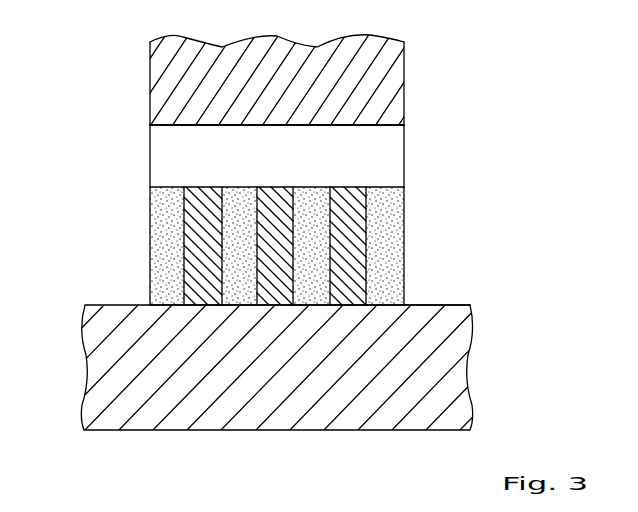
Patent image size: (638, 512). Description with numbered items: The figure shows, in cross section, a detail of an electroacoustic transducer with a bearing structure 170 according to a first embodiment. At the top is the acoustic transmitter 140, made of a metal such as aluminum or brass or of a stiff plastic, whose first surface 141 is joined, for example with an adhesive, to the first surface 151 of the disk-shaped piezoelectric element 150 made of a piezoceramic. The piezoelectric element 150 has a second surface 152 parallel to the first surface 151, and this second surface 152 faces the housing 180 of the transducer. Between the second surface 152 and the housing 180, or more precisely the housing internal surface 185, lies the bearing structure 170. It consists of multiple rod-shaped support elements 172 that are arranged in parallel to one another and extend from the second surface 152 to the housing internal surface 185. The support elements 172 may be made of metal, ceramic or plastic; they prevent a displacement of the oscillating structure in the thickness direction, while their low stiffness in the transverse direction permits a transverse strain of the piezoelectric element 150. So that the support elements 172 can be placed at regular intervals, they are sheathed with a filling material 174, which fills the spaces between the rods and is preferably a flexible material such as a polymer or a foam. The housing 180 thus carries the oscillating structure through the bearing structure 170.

The acoustic transmitter 140 is at (388, 73).
The first surface 141 is at (193, 143).
The piezoelectric element 150 is at (386, 156).
The first surface 151 is at (372, 124).
The second surface 152 is at (400, 186).
The bearing structure 170 is at (115, 251).
The support elements 172 is at (351, 188).
The filling material 174 is at (242, 188).
The housing 180 is at (283, 415).
The housing internal surface 185 is at (443, 305).